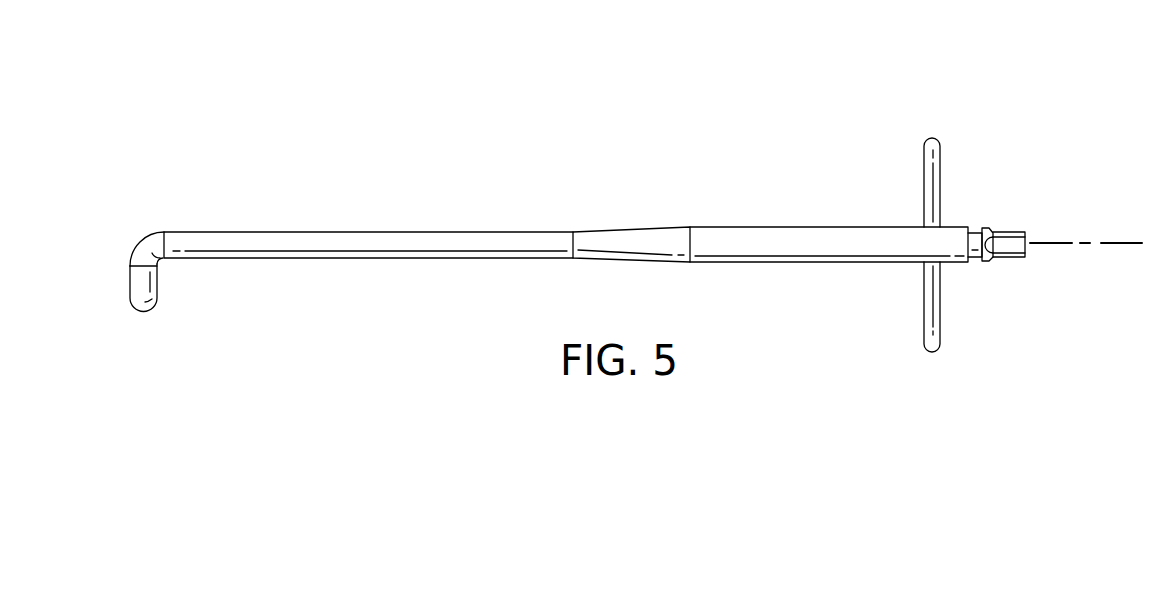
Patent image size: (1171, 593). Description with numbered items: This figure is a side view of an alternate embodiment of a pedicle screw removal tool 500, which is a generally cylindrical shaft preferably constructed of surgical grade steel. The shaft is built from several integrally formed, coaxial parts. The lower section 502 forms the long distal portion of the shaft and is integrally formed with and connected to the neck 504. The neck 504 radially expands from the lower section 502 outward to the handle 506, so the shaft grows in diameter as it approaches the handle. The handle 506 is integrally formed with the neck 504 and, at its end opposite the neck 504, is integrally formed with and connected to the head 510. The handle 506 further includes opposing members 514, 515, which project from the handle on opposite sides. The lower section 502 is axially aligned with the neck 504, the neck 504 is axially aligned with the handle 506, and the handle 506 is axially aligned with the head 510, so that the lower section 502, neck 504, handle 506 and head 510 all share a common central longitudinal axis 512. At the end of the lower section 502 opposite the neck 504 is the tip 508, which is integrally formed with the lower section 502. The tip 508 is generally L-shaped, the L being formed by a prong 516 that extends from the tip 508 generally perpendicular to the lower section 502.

The pedicle screw removal tool 500 is at (433, 132).
The lower section 502 is at (370, 232).
The neck 504 is at (631, 229).
The handle 506 is at (830, 227).
The tip 508 is at (152, 232).
The head 510 is at (1007, 232).
The central longitudinal axis 512 is at (1122, 245).
The opposing member 514 is at (932, 137).
The opposing member 515 is at (942, 300).
The prong 516 is at (140, 283).